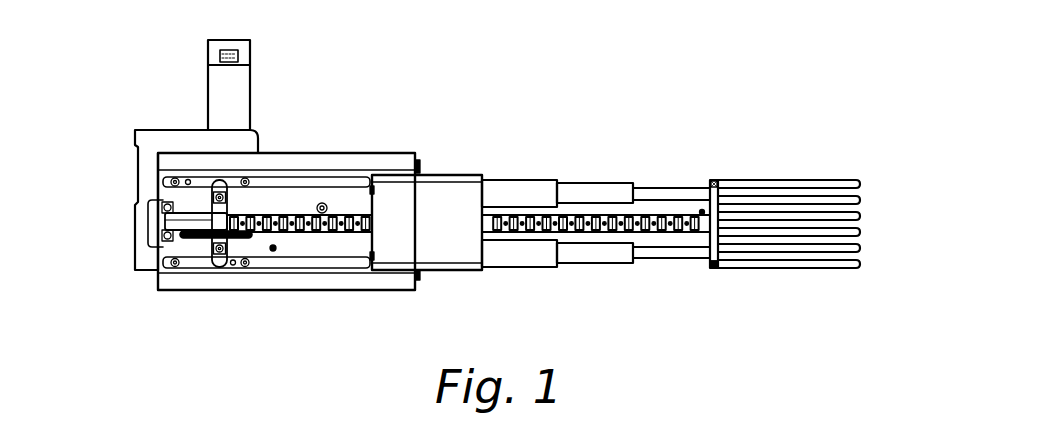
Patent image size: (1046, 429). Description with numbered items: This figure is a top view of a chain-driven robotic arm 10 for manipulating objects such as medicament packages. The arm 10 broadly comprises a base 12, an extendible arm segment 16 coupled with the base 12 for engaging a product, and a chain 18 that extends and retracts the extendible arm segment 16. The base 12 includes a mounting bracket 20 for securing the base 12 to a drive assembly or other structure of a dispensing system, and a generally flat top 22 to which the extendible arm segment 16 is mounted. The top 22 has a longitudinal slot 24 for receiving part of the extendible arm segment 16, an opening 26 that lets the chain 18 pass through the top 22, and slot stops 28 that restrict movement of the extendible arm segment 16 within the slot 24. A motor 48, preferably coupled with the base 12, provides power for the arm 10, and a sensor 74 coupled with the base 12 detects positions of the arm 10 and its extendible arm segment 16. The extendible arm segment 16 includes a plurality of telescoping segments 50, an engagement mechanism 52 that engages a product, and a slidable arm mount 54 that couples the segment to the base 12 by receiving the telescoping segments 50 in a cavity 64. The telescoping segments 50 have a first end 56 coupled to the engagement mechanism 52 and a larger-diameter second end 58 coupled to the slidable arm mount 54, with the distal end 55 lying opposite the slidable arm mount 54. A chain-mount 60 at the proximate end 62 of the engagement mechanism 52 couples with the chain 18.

The arm 10 is at (61, 76).
The base 12 is at (192, 290).
The extendible arm segment 16 is at (597, 163).
The chain 18 is at (665, 215).
The mounting bracket 20 is at (135, 220).
The top 22 is at (332, 167).
The longitudinal slot 24 is at (318, 258).
The opening 26 is at (180, 233).
The slot stops 28 is at (420, 167).
The motor 48 is at (208, 115).
The telescoping segments 50 is at (593, 255).
The engagement mechanism 52 is at (788, 183).
The slidable arm mount 54 is at (462, 257).
The distal end 55 is at (669, 128).
The first end 56 is at (682, 278).
The second end 58 is at (506, 167).
The chain-mount 60 is at (702, 210).
The proximate end 62 is at (712, 268).
The cavity 64 is at (481, 195).
The sensor 74 is at (244, 42).